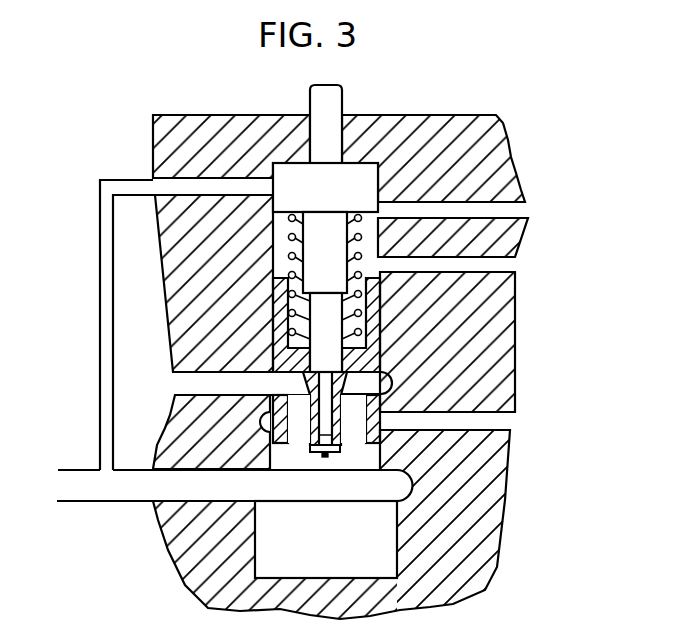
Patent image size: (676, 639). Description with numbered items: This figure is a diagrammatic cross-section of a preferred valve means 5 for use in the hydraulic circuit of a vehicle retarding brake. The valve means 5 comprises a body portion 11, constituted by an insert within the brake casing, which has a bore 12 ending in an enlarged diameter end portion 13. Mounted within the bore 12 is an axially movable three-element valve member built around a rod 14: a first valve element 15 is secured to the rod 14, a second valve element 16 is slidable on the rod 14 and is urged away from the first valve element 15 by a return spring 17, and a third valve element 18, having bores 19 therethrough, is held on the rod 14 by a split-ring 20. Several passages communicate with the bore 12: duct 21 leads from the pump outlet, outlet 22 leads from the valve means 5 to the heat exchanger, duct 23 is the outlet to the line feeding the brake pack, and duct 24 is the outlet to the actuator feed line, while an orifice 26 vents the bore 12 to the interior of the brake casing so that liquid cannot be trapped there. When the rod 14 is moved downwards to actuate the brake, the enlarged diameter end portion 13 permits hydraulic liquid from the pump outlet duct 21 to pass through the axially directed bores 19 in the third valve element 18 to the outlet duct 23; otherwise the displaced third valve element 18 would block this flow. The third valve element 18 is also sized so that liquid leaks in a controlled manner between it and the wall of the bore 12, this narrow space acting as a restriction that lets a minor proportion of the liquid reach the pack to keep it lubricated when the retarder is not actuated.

The valve means 5 is at (520, 140).
The body portion 11 is at (423, 115).
The bore 12 is at (284, 240).
The enlarged diameter end portion 13 is at (326, 539).
The rod 14 is at (342, 92).
The first valve element 15 is at (325, 187).
The second valve element 16 is at (376, 318).
The return spring 17 is at (360, 252).
The third valve element 18 is at (384, 406).
The bores 19 is at (295, 424).
The split-ring 20 is at (339, 452).
The duct 21 is at (218, 485).
The outlet 22 is at (202, 378).
The duct 23 is at (498, 413).
The duct 24 is at (500, 205).
The orifice 26 is at (505, 268).